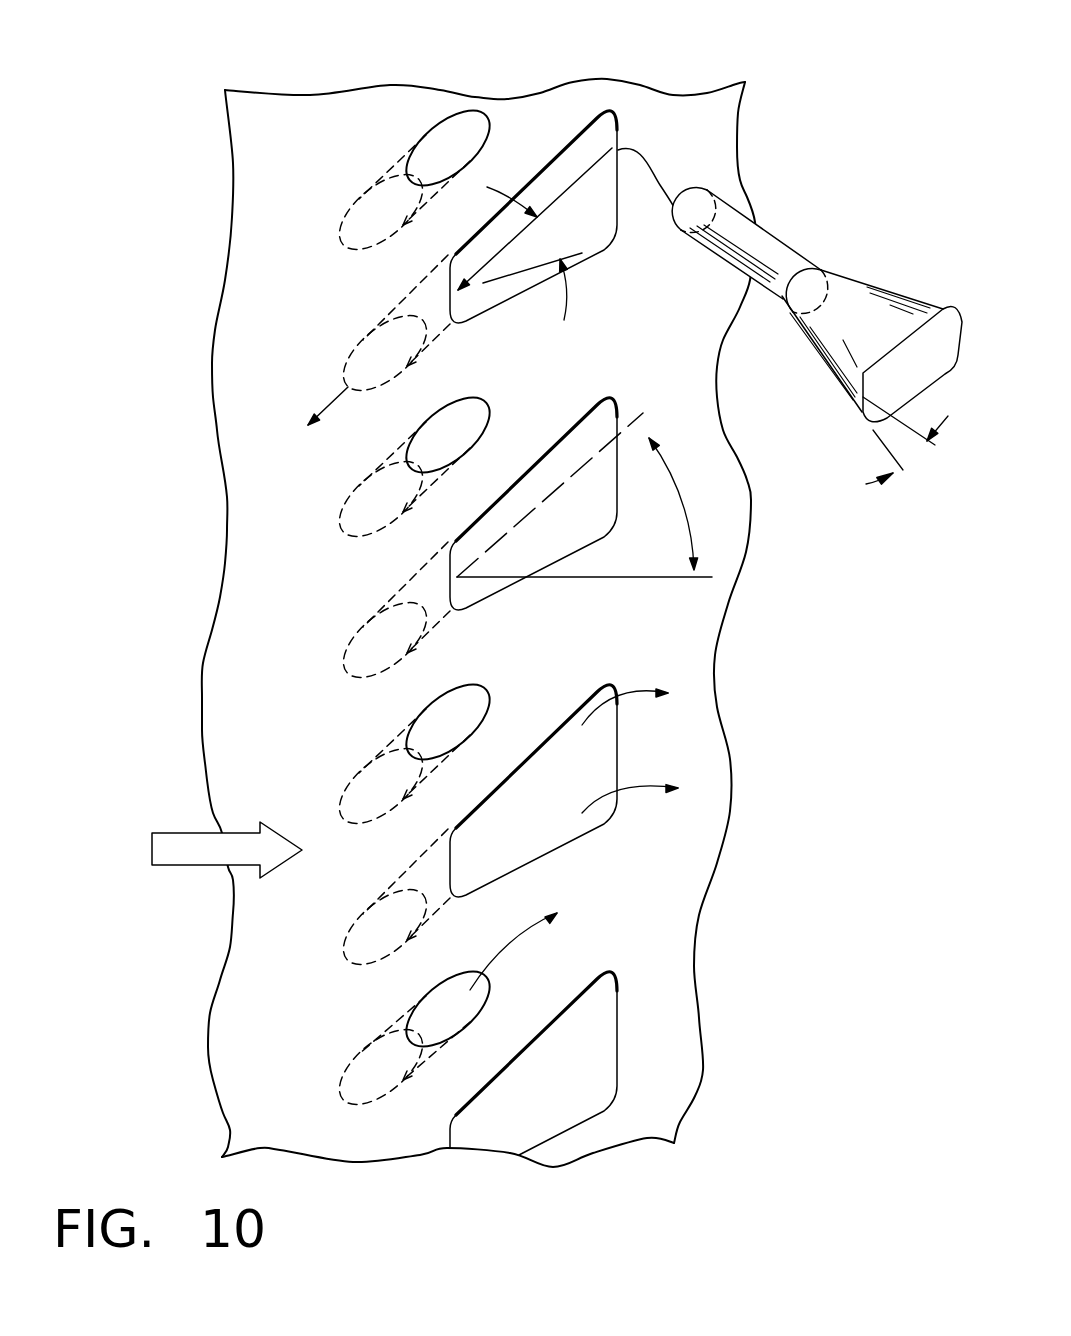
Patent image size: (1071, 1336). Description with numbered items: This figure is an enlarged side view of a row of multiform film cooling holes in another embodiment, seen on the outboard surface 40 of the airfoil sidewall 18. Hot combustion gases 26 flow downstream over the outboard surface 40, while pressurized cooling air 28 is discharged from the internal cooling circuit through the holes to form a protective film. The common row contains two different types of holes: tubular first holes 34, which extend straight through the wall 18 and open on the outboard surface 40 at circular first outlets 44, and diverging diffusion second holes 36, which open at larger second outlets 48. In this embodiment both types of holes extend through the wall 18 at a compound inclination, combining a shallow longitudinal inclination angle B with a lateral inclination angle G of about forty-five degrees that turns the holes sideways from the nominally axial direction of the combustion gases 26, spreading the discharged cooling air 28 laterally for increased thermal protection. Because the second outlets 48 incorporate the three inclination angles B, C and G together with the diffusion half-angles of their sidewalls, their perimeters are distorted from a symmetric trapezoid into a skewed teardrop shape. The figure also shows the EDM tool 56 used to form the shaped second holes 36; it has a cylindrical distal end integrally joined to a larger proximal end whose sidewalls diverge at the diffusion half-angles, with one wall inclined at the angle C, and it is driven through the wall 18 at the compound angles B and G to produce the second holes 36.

The sidewall 18 is at (357, 88).
The outboard surface 40 is at (307, 190).
The EDM tool 56 is at (767, 230).
The first holes 34 is at (482, 686).
The first outlet 44 is at (425, 740).
The second outlet 48 is at (492, 845).
The second holes 36 is at (609, 684).
The cooling air 28 is at (633, 796).
The combustion gases 26 is at (207, 868).
The inclination angle B is at (566, 298).
The lateral inclination angle G is at (681, 494).
The angle C is at (872, 489).